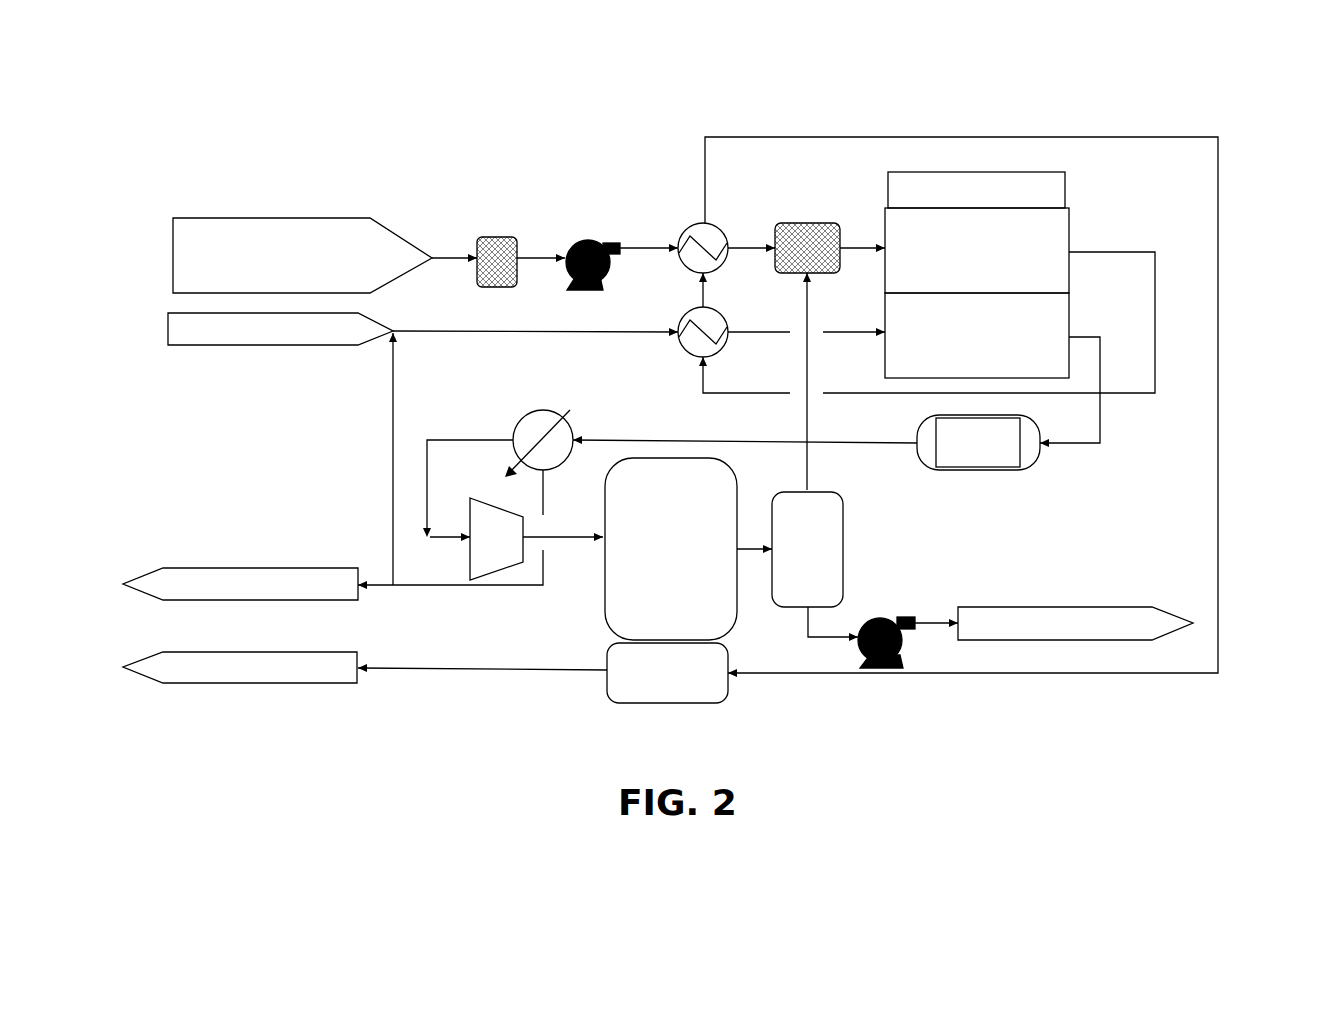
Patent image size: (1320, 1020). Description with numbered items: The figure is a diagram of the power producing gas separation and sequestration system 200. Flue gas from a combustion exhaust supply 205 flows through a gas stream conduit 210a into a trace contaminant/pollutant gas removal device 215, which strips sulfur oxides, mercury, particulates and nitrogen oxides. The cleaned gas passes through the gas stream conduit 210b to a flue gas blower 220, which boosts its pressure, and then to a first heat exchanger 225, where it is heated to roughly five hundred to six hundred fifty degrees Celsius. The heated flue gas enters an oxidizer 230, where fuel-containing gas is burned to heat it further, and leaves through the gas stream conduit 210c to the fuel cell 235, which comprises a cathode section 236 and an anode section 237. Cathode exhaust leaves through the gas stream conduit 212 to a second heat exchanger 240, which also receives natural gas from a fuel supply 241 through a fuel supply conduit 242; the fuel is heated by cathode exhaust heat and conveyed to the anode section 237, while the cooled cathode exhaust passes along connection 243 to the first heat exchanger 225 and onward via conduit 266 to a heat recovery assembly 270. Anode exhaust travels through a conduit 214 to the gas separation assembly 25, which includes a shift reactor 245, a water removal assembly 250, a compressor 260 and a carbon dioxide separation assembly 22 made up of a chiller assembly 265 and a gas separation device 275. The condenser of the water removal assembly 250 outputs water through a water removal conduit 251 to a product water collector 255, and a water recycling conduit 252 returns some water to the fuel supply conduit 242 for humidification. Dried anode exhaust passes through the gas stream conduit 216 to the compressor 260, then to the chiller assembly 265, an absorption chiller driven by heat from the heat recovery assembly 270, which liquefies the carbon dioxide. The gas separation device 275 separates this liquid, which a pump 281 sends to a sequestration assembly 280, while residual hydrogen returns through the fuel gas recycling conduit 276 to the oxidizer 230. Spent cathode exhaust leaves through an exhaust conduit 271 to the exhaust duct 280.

The power producing gas separation and sequestration system 200 is at (308, 78).
The combustion exhaust supply 205 is at (222, 220).
The gas stream conduit 210a is at (448, 252).
The gas stream conduit 210b is at (538, 257).
The gas stream conduit 210c is at (855, 252).
The trace contaminant/pollutant gas removal device 215 is at (498, 288).
The flue gas blower 220 is at (592, 243).
The first heat exchanger 225 is at (682, 230).
The oxidizer 230 is at (773, 230).
The fuel cell 235 is at (907, 172).
The cathode section 236 is at (1070, 237).
The anode section 237 is at (1070, 330).
The gas stream conduit 212 is at (1158, 267).
The conduit 266 is at (1220, 303).
The connection line between heat exchangers 243 is at (700, 296).
The second heat exchanger 240 is at (690, 347).
The fuel supply 241 is at (228, 348).
The fuel supply conduit 242 is at (450, 328).
The conduit 214 is at (1100, 422).
The shift reactor 245 is at (1015, 472).
The fuel gas recycling conduit 276 is at (808, 465).
The water removal assembly 250 is at (515, 423).
The gas stream conduit 216 is at (428, 482).
The water recycling conduit 252 is at (393, 465).
The compressor 260 is at (472, 557).
The water removal conduit 251 is at (408, 600).
The product water collector 255 is at (267, 567).
The chiller assembly 265 is at (613, 602).
The carbon dioxide separation assembly 22 is at (753, 508).
The gas separation device 275 is at (833, 547).
The pump 281 is at (890, 615).
The sequestration assembly 280 is at (1067, 607).
The heat recovery assembly 270 is at (706, 703).
The gas separation assembly 25 is at (590, 688).
The exhaust conduit 271 is at (438, 672).